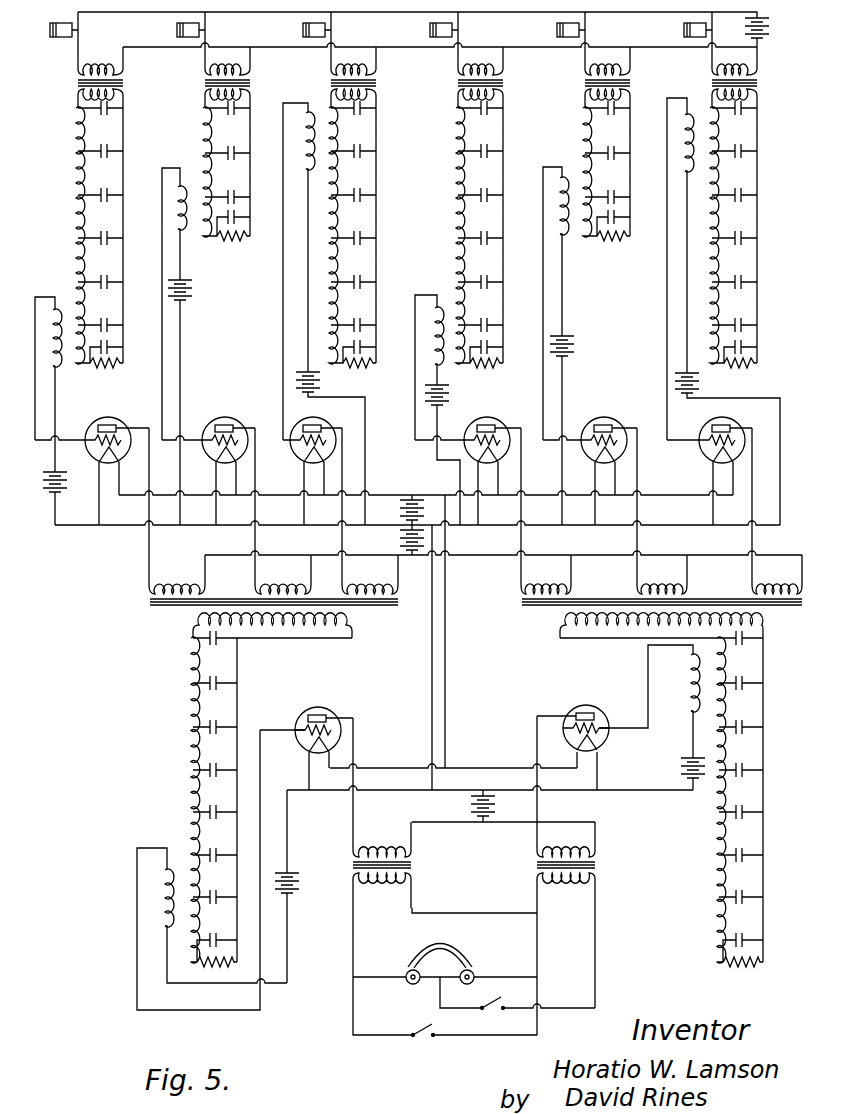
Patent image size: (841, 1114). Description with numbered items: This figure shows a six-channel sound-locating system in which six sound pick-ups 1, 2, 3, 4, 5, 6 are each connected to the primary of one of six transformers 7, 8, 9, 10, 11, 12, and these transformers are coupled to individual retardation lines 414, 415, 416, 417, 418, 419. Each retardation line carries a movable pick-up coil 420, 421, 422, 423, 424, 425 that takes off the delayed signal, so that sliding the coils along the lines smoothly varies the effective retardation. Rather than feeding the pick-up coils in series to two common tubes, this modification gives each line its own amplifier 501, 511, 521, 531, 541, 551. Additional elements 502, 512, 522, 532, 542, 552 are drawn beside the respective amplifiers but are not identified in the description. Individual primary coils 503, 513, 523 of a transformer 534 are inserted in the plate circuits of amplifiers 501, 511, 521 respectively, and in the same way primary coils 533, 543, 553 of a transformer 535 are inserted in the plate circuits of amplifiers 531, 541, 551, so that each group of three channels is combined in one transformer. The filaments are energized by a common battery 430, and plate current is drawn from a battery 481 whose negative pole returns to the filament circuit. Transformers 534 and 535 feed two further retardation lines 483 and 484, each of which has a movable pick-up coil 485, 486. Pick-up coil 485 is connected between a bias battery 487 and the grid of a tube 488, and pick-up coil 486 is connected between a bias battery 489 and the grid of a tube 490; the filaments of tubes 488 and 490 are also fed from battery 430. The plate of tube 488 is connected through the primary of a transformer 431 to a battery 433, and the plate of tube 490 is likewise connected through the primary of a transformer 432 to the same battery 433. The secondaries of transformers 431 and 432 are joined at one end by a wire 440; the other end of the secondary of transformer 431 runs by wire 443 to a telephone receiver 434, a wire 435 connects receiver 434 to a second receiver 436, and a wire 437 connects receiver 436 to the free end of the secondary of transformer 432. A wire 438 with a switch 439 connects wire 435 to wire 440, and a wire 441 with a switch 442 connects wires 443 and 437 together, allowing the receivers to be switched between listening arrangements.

The sound pick-up 1 is at (53, 31).
The sound pick-up 2 is at (180, 31).
The sound pick-up 3 is at (307, 31).
The sound pick-up 4 is at (434, 31).
The sound pick-up 5 is at (561, 31).
The sound pick-up 6 is at (688, 31).
The transformer 7 is at (89, 56).
The transformer 8 is at (218, 56).
The transformer 9 is at (346, 56).
The transformer 10 is at (468, 56).
The transformer 11 is at (595, 56).
The transformer 12 is at (722, 56).
The retardation line 414 is at (123, 166).
The retardation line 415 is at (250, 236).
The retardation line 416 is at (377, 222).
The retardation line 417 is at (503, 118).
The retardation line 418 is at (630, 236).
The retardation line 419 is at (757, 165).
The movable pick-up coil 420 is at (61, 308).
The movable pick-up coil 421 is at (181, 188).
The movable pick-up coil 422 is at (311, 114).
The movable pick-up coil 423 is at (439, 307).
The movable pick-up coil 424 is at (563, 236).
The movable pick-up coil 425 is at (688, 116).
The battery 430 is at (392, 515).
The transformer 431 is at (353, 866).
The transformer 432 is at (595, 875).
The battery 433 is at (470, 813).
The telephone receiver 434 is at (408, 984).
The wire 435 is at (455, 976).
The telephone receiver 436 is at (472, 969).
The wire 437 is at (537, 933).
The wire 438 is at (595, 940).
The switch 439 is at (500, 1010).
The wire 440 is at (458, 913).
The wire 441 is at (353, 1015).
The switch 442 is at (427, 1038).
The wire 443 is at (353, 951).
The battery 481 is at (400, 544).
The retardation line 483 is at (237, 705).
The retardation line 484 is at (763, 743).
The movable pick-up coil 485 is at (172, 870).
The movable pick-up coil 486 is at (686, 698).
The bias battery 487 is at (292, 893).
The vacuum tube 488 is at (312, 708).
The bias battery 489 is at (679, 770).
The vacuum tube 490 is at (608, 690).
The amplifier 501 is at (126, 420).
The battery 502 is at (37, 492).
The primary coil 503 is at (175, 575).
The amplifier 511 is at (243, 420).
The battery 512 is at (188, 300).
The primary coil 513 is at (298, 583).
The amplifier 521 is at (316, 418).
The battery 522 is at (322, 382).
The primary coil 523 is at (385, 583).
The amplifier 531 is at (496, 419).
The battery 532 is at (449, 393).
The primary coil 533 is at (558, 583).
The transformer 534 is at (165, 606).
The transformer 535 is at (540, 607).
The amplifier 541 is at (594, 418).
The battery 542 is at (577, 348).
The primary coil 543 is at (676, 583).
The amplifier 551 is at (727, 418).
The battery 552 is at (701, 384).
The primary coil 553 is at (787, 583).